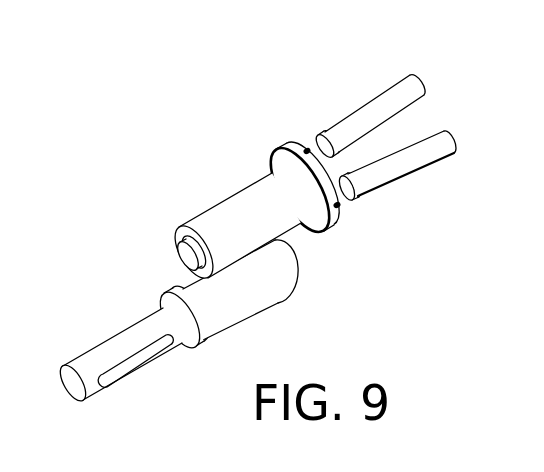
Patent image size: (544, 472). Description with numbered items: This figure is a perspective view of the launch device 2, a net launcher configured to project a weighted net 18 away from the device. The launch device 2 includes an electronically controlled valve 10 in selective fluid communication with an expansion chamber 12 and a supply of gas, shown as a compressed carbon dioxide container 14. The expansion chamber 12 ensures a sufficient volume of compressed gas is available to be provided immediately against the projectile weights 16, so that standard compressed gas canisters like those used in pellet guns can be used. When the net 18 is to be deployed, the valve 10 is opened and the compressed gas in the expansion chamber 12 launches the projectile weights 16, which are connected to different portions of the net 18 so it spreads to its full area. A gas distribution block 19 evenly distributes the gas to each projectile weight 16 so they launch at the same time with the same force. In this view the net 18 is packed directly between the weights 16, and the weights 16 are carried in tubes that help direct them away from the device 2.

The launch device 2 is at (291, 250).
The electronically controlled valve 10 is at (250, 187).
The expansion chamber 12 is at (279, 304).
The compressed carbon dioxide container 14 is at (123, 365).
The projectile weights 16 is at (417, 90).
The weighted net 18 is at (393, 137).
The gas distribution block 19 is at (330, 222).